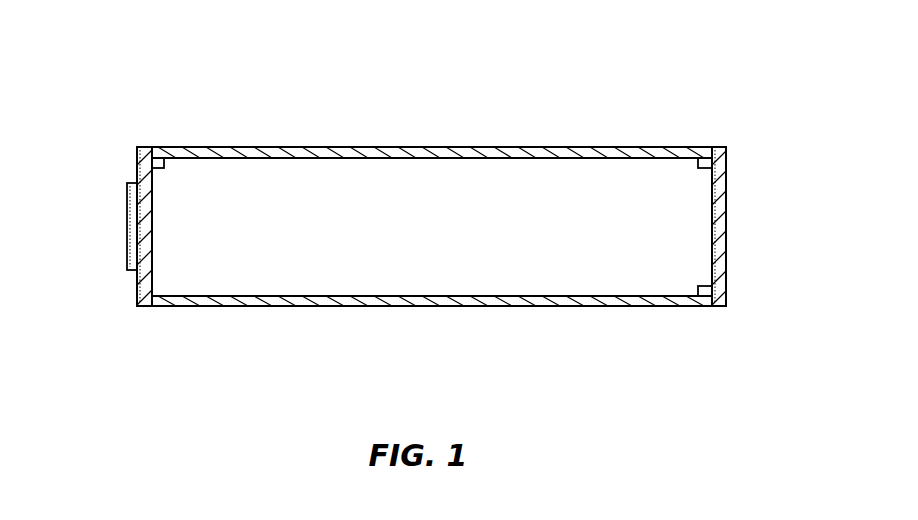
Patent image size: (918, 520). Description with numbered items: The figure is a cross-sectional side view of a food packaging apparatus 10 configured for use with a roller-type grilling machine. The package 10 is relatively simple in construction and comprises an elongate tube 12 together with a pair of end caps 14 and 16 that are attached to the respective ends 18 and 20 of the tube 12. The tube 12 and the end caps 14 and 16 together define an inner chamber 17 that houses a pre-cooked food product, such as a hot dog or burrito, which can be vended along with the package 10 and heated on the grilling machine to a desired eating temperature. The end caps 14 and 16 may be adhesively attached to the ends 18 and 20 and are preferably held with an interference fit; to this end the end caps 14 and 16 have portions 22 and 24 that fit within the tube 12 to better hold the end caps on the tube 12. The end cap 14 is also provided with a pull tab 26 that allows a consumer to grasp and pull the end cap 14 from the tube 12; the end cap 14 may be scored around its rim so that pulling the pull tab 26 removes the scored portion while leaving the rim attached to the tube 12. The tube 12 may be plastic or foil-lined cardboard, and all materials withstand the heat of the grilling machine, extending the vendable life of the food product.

The food packaging apparatus 10 is at (660, 119).
The elongate tube 12 is at (443, 147).
The end cap 14 is at (136, 167).
The end cap 16 is at (726, 212).
The inner chamber 17 is at (312, 271).
The end of the tube 18 is at (158, 308).
The end of the tube 20 is at (703, 307).
The portion of end cap 22 is at (162, 160).
The portion of end cap 24 is at (700, 165).
The pull tab 26 is at (126, 240).